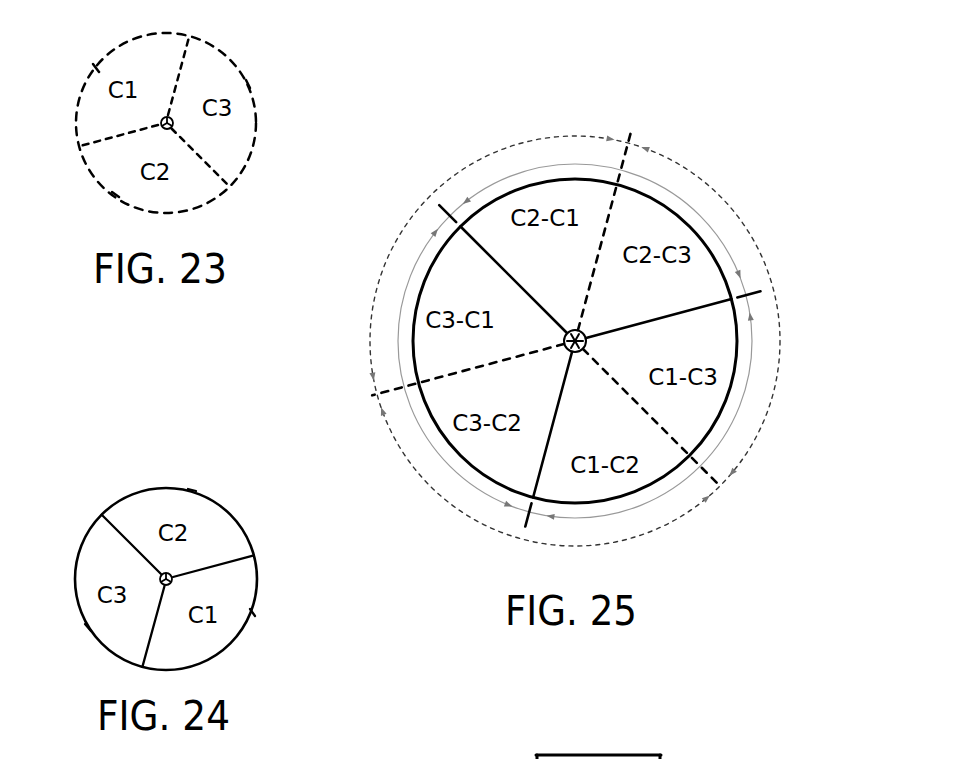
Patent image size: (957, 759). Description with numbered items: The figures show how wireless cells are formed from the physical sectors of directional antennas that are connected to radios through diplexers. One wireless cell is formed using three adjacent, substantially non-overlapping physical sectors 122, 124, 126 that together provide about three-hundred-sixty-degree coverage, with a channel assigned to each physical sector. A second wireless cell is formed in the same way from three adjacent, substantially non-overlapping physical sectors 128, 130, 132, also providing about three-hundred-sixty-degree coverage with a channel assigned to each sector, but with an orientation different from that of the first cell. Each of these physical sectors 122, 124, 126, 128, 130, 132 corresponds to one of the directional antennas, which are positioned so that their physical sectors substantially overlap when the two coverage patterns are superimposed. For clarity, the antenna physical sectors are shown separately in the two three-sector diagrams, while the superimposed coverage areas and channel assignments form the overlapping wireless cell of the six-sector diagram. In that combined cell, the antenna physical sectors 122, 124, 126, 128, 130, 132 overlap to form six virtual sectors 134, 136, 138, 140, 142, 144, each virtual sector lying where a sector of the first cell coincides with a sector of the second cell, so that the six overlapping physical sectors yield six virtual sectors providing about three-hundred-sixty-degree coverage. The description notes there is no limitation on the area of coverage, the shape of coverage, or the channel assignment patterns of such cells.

In FIG. 23, the physical sector 122 is at (95, 68).
In FIG. 25, the physical sector 122 is at (412, 215).
In FIG. 23, the physical sector 124 is at (248, 83).
In FIG. 25, the physical sector 124 is at (747, 223).
In FIG. 23, the physical sector 126 is at (115, 195).
In FIG. 25, the physical sector 126 is at (438, 498).
In FIG. 24, the physical sector 128 is at (88, 628).
In FIG. 25, the physical sector 128 is at (398, 345).
In FIG. 24, the physical sector 130 is at (192, 490).
In FIG. 25, the physical sector 130 is at (575, 165).
In FIG. 24, the physical sector 132 is at (252, 613).
In FIG. 25, the physical sector 132 is at (733, 420).
In FIG. 25, the virtual sector 134 is at (601, 358).
In FIG. 25, the virtual sector 136 is at (571, 392).
In FIG. 25, the virtual sector 138 is at (527, 375).
In FIG. 25, the virtual sector 140 is at (516, 340).
In FIG. 25, the virtual sector 142 is at (544, 303).
In FIG. 25, the virtual sector 144 is at (594, 318).